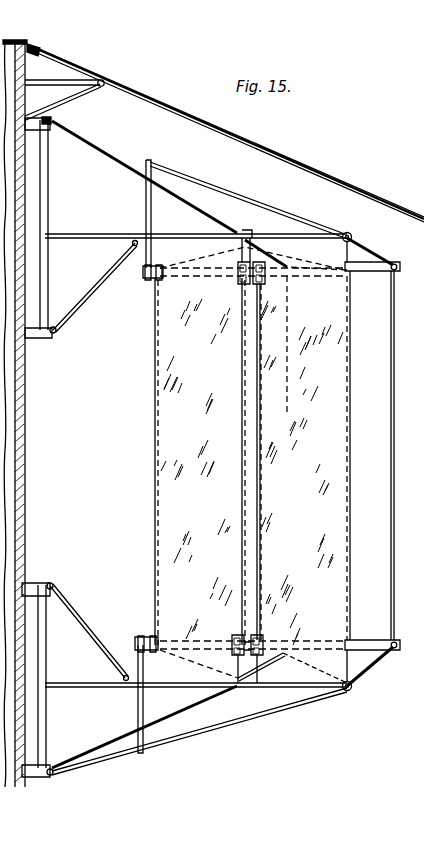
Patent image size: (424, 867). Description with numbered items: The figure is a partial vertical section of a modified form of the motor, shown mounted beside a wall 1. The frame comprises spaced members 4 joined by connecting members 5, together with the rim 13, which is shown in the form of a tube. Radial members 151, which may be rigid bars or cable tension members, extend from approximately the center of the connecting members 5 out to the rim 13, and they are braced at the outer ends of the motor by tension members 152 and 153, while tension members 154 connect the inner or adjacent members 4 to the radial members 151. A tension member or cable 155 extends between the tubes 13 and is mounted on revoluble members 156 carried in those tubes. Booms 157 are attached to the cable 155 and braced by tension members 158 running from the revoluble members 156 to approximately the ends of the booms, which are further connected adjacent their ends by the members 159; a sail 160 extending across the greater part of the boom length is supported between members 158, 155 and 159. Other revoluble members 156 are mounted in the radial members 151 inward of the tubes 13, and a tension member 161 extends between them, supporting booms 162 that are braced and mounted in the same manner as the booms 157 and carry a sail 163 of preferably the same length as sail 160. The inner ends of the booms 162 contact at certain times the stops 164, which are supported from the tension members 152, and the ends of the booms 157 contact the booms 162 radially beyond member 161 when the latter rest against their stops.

The wall 1 is at (25, 428).
The spaced members 4 is at (52, 118).
The connecting members 5 is at (48, 200).
The rim 13 is at (353, 238).
The radial members 151 is at (96, 239).
The tension members 152 is at (226, 190).
The tension members 153 is at (193, 212).
The tension members 154 is at (90, 292).
The tension member or cable 155 is at (392, 328).
The revoluble members 156 is at (245, 238).
The booms 157 is at (373, 272).
The tension members 158 is at (352, 263).
The members 159 is at (262, 482).
The sail 160 is at (330, 405).
The tension member 161 is at (257, 352).
The booms 162 is at (143, 275).
The sail 163 is at (155, 378).
The stops 164 is at (146, 216).